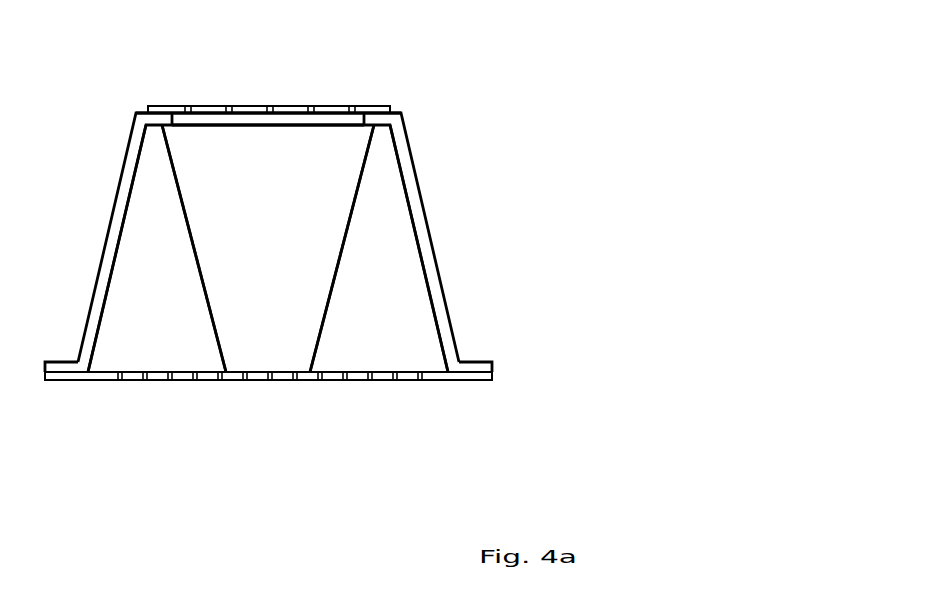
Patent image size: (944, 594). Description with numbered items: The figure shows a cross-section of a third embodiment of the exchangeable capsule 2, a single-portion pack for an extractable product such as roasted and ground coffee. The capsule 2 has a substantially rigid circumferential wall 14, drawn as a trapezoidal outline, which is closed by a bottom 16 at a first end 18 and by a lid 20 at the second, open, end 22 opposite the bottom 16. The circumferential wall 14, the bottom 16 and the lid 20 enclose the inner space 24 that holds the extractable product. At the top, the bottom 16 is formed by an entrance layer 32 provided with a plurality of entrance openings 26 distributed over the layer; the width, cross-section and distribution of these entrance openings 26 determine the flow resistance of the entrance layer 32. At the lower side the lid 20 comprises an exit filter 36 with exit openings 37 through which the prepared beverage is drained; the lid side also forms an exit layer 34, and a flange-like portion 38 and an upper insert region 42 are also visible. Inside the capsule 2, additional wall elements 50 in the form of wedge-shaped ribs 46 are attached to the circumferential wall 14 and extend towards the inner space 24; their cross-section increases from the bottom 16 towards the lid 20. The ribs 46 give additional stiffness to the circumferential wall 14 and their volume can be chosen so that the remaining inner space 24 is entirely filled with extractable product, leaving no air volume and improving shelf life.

The exchangeable capsule 2 is at (537, 418).
The circumferential wall 14 is at (433, 267).
The bottom 16 is at (375, 113).
The first end 18 is at (403, 130).
The lid 20 is at (458, 380).
The second, open, end 22 is at (452, 355).
The inner space 24 is at (276, 257).
The entrance openings 26 is at (267, 104).
The entrance layer 32 is at (330, 106).
The exit layer 34 is at (73, 380).
The exit filter 36 is at (283, 381).
The exit openings 37 is at (194, 381).
The base plate 38 is at (482, 368).
The insert 42 is at (383, 120).
The wedge-shaped ribs 46 is at (150, 249).
The additional wall elements 50 is at (150, 286).